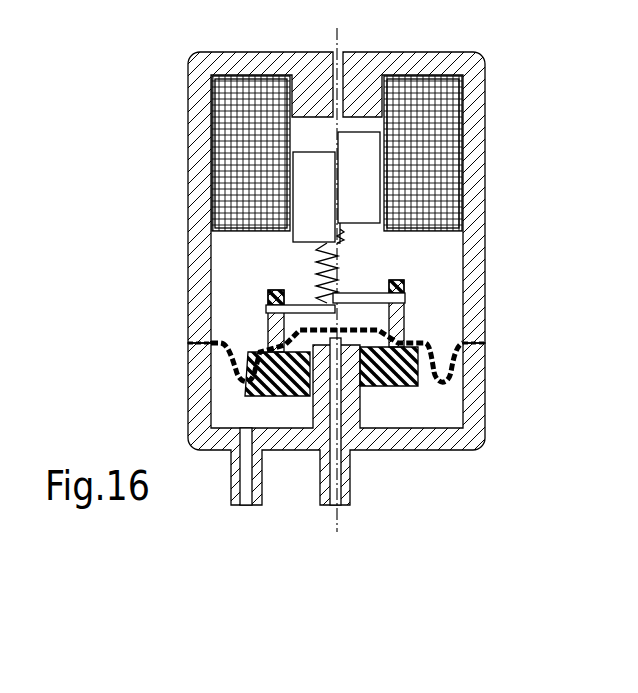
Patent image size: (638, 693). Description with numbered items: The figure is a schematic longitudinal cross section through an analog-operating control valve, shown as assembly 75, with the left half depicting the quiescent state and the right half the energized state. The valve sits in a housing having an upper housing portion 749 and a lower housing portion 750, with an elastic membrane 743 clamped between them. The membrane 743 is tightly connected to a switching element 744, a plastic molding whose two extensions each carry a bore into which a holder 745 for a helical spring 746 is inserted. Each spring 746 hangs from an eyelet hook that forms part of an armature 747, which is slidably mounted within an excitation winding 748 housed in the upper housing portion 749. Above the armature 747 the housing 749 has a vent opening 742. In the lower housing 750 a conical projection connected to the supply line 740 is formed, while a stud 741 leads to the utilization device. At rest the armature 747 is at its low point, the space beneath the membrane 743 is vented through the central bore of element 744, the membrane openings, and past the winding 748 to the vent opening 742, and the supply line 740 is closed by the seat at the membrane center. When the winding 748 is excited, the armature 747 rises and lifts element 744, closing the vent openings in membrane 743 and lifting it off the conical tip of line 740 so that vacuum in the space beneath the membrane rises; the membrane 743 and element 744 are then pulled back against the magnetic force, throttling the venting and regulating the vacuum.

The switch assembly 75 is at (452, 477).
The supply line 740 is at (333, 503).
The stud 741 is at (247, 503).
The vent opening 742 is at (342, 56).
The elastic membrane 743 is at (250, 352).
The switching element 744 is at (282, 385).
The holder 745 is at (266, 302).
The helical spring 746 is at (316, 276).
The armature 747 is at (292, 242).
The excitation winding 748 is at (240, 165).
The upper housing portion 749 is at (478, 164).
The lower housing portion 750 is at (473, 405).